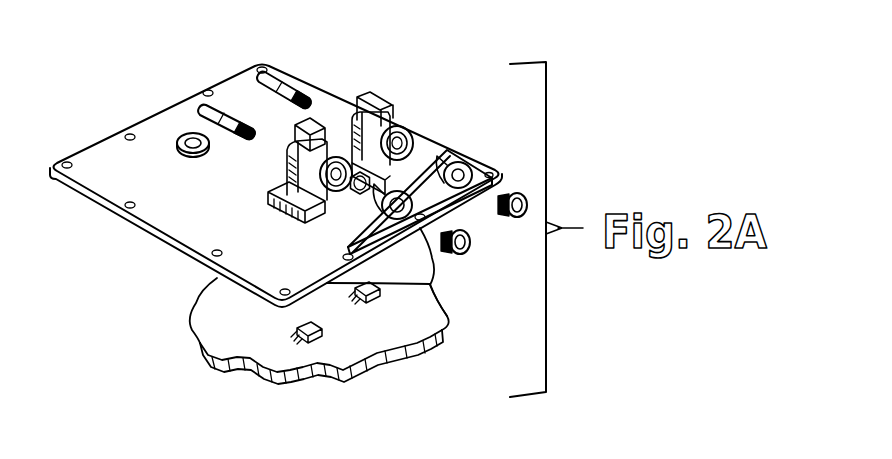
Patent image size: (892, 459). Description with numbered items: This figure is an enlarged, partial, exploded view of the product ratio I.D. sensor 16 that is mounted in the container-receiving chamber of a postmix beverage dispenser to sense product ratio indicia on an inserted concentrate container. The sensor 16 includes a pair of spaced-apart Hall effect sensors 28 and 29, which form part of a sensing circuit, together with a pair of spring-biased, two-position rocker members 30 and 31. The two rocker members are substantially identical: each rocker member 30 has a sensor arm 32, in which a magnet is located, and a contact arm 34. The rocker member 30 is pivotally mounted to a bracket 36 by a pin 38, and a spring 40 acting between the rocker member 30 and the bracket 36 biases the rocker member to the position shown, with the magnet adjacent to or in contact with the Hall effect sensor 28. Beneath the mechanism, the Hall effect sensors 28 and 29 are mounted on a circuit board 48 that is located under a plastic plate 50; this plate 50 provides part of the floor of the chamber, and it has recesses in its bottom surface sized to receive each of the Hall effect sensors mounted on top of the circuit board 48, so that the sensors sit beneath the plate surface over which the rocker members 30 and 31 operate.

The product ratio I.D. sensor 16 is at (355, 81).
The Hall effect sensor 28 is at (201, 323).
The Hall effect sensor 29 is at (433, 286).
The rocker member 30 is at (284, 168).
The rocker member 31 is at (398, 117).
The sensor arm 32 is at (270, 215).
The contact arm 34 is at (293, 138).
The bracket 36 is at (420, 202).
The pin 38 is at (249, 125).
The spring 40 is at (357, 205).
The circuit board 48 is at (355, 342).
The plastic plate 50 is at (276, 186).